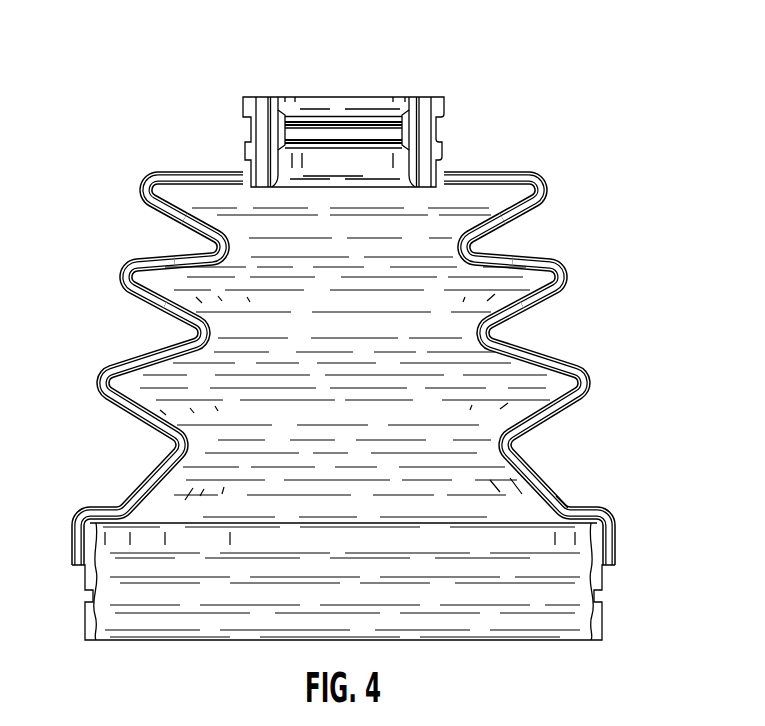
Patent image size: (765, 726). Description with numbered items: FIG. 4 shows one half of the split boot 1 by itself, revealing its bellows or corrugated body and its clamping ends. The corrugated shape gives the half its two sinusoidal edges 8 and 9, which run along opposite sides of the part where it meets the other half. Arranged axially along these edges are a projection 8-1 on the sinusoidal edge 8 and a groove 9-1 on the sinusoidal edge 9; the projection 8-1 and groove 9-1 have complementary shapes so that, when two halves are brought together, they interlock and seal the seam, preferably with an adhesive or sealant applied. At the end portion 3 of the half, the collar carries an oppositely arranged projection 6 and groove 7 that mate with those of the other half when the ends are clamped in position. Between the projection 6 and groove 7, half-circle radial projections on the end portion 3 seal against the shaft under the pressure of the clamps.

The boot 1 is at (651, 554).
The end portion 3 is at (473, 97).
The projection 6 is at (423, 102).
The groove 7 is at (265, 96).
The sinusoidal edge 8 is at (542, 170).
The projection 8-1 is at (557, 267).
The sinusoidal edge 9 is at (150, 166).
The groove 9-1 is at (122, 273).